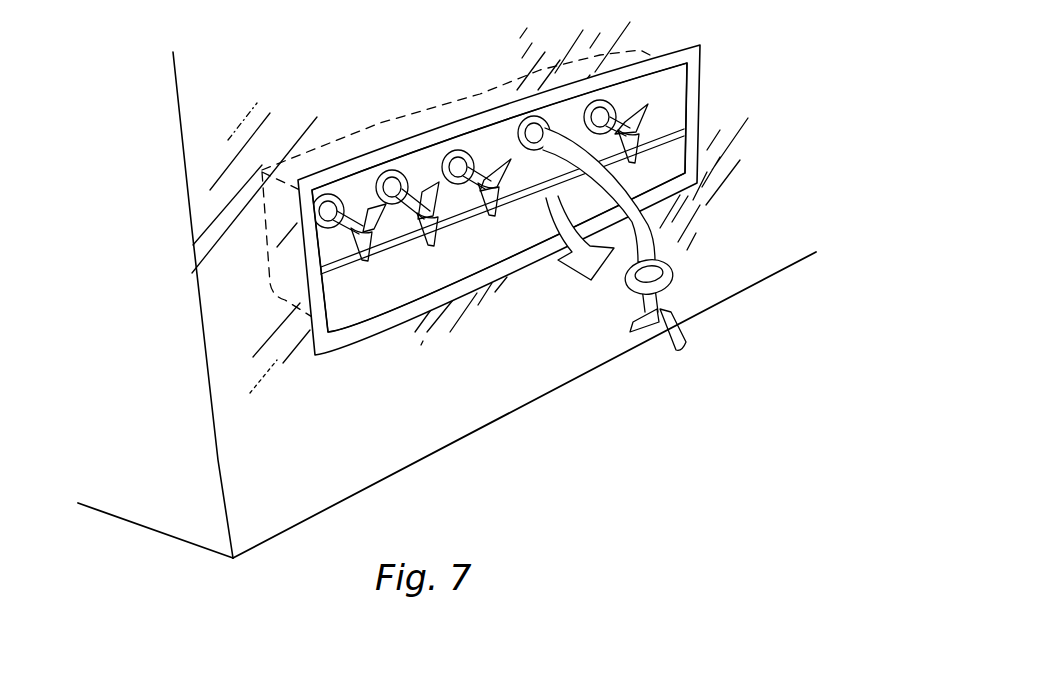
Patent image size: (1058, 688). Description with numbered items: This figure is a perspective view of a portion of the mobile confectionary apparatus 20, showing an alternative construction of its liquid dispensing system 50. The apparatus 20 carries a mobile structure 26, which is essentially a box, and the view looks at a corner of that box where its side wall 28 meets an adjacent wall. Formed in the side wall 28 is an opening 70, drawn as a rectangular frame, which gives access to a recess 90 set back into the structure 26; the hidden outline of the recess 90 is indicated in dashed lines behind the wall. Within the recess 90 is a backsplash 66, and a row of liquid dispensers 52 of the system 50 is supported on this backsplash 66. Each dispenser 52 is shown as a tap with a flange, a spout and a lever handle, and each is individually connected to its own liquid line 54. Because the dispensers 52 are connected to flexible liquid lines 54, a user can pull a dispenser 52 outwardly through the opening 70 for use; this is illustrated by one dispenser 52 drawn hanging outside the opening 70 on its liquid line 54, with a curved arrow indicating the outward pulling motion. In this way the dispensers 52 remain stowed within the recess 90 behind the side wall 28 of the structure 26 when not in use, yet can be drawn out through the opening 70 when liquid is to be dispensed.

The mobile confectionary apparatus 20 is at (155, 122).
The mobile structure 26 is at (153, 535).
The side wall 28 is at (267, 497).
The liquid dispensing system 50 is at (641, 95).
The liquid dispensers 52 is at (640, 128).
The liquid lines 54 is at (637, 229).
The backsplash 66 is at (480, 150).
The opening 70 is at (703, 53).
The recess 90 is at (675, 137).